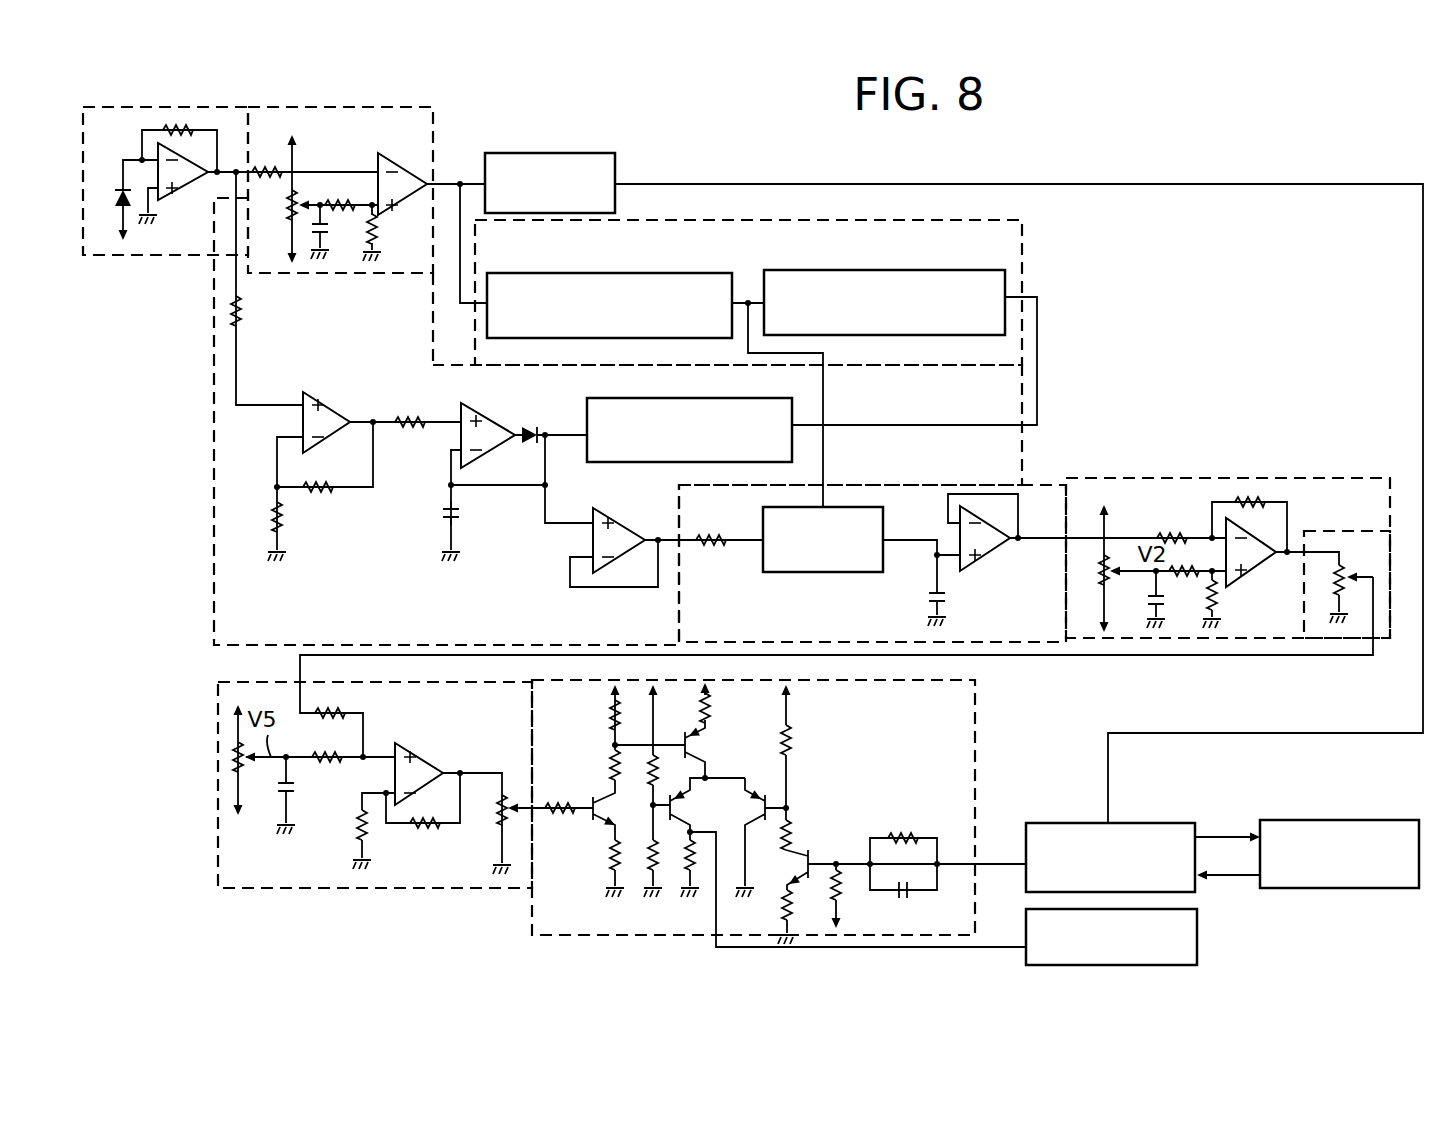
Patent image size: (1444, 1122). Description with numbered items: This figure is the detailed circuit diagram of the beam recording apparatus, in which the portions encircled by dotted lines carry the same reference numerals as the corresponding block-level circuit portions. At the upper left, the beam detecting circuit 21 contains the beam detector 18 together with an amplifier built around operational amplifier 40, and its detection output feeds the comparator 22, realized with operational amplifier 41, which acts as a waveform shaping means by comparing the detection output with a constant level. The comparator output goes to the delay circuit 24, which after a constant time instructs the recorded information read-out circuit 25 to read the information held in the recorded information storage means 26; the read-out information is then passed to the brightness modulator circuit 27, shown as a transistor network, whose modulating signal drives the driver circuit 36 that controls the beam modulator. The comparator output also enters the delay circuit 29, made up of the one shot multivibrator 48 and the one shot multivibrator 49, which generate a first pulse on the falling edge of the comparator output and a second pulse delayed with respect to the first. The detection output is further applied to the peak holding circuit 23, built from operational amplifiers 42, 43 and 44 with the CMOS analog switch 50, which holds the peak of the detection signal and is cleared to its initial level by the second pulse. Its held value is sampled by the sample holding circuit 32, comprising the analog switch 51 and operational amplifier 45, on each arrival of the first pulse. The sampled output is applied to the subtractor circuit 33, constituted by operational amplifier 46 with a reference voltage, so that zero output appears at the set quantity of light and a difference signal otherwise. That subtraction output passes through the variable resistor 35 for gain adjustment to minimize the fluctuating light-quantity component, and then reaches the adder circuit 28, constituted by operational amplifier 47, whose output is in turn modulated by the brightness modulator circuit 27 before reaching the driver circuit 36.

The beam detector 18 is at (115, 204).
The beam detecting circuit 21 is at (166, 107).
The comparator 22 is at (338, 107).
The peak holding circuit 23 is at (214, 463).
The delay circuit 24 is at (554, 153).
The recorded information read-out circuit 25 is at (1070, 823).
The recorded information storage means 26 is at (1337, 820).
The brightness modulator circuit 27 is at (532, 935).
The adder circuit 28 is at (391, 888).
The delay circuit 29 is at (1022, 240).
The sample holding circuit 32 is at (1052, 482).
The subtractor circuit 33 is at (1213, 478).
The variable resistor 35 is at (1390, 637).
The driver circuit 36 is at (1197, 935).
The operational amplifier 40 is at (183, 192).
The operational amplifier 41 is at (396, 153).
The operational amplifier 42 is at (332, 392).
The operational amplifier 43 is at (461, 438).
The operational amplifier 44 is at (593, 540).
The operational amplifier 45 is at (1000, 555).
The operational amplifier 46 is at (1254, 567).
The operational amplifier 47 is at (420, 745).
The one shot multivibrator 48 is at (660, 273).
The one shot multivibrator 49 is at (885, 270).
The CMOS analog switch 50 is at (628, 462).
The analog switch 51 is at (820, 572).